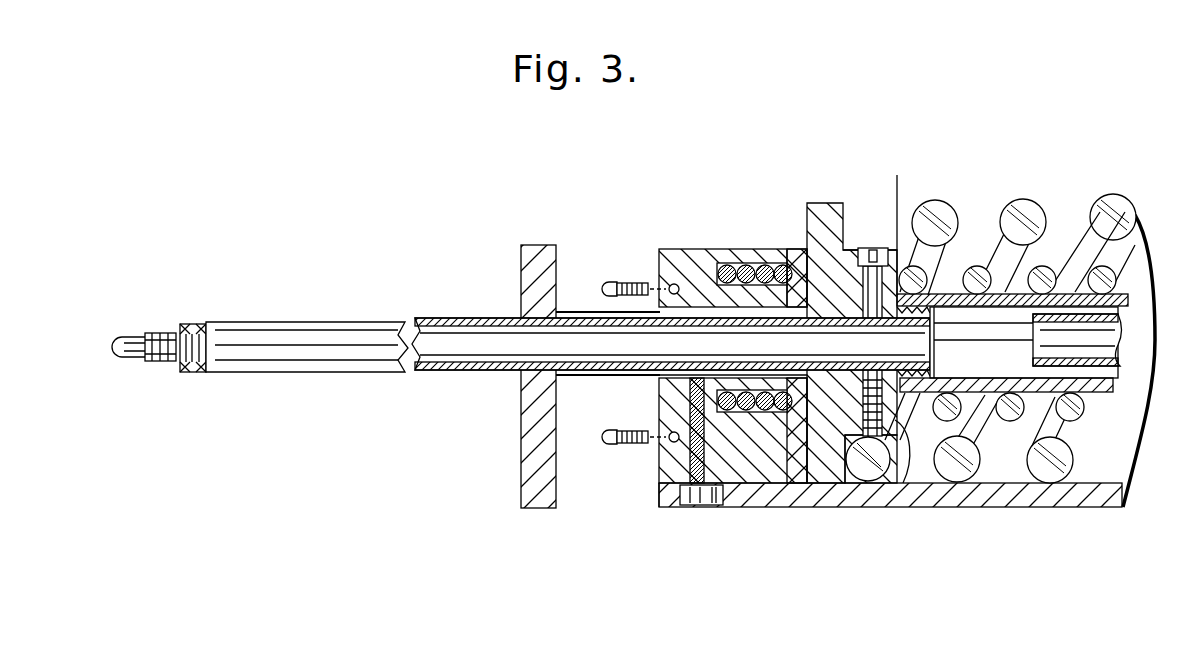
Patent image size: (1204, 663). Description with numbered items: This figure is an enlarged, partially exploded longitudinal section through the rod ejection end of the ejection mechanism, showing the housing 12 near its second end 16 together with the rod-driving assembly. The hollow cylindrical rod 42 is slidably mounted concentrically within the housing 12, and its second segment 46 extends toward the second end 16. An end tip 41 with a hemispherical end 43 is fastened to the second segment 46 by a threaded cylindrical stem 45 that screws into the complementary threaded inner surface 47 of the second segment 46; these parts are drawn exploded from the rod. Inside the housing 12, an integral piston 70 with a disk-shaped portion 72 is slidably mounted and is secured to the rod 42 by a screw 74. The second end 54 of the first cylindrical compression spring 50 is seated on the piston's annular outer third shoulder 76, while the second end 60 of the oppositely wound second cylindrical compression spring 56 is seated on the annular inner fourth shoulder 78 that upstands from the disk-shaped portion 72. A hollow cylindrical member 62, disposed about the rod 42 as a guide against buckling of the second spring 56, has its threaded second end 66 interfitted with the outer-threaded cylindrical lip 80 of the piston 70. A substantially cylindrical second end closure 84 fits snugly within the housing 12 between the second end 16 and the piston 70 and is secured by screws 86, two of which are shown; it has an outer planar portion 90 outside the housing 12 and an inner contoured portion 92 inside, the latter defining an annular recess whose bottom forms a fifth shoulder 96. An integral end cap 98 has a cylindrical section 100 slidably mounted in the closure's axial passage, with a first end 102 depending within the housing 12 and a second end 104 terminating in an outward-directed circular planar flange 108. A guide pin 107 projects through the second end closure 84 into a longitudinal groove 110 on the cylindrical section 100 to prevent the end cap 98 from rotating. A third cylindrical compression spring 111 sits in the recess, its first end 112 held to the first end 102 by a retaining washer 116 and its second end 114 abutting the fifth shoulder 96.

The housing 12 is at (990, 506).
The second end 16 is at (659, 506).
The end tip 41 is at (143, 311).
The rod 42 is at (1100, 351).
The hemispherical end 43 is at (113, 340).
The threaded cylindrical stem 45 is at (160, 333).
The second segment 46 is at (233, 322).
The threaded inner surface 47 is at (185, 360).
The first cylindrical compression spring 50 is at (1136, 216).
The second end 54 is at (930, 212).
The second cylindrical compression spring 56 is at (1012, 418).
The second end 60 is at (977, 266).
The hollow cylindrical member 62 is at (1062, 292).
The second end 66 is at (896, 221).
The piston 70 is at (850, 485).
The disk-shaped portion 72 is at (809, 212).
The screw 74 is at (869, 247).
The annular outer third shoulder 76 is at (845, 215).
The annular inner fourth shoulder 78 is at (905, 485).
The cylindrical lip 80 is at (1007, 342).
The second end closure 84 is at (762, 482).
The screws 86 is at (623, 281).
The outer planar portion 90 is at (660, 392).
The inner contoured portion 92 is at (797, 380).
The fifth shoulder 96 is at (722, 266).
The end cap 98 is at (596, 305).
The cylindrical section 100 is at (585, 305).
The first end 102 is at (578, 303).
The second end 104 is at (776, 285).
The guide pin 107 is at (698, 505).
The outward-directed circular planar flange 108 is at (521, 508).
The longitudinal groove 110 is at (592, 378).
The third cylindrical compression spring 111 is at (749, 265).
The first end 112 is at (792, 258).
The second end 114 is at (731, 264).
The retaining washer 116 is at (838, 460).